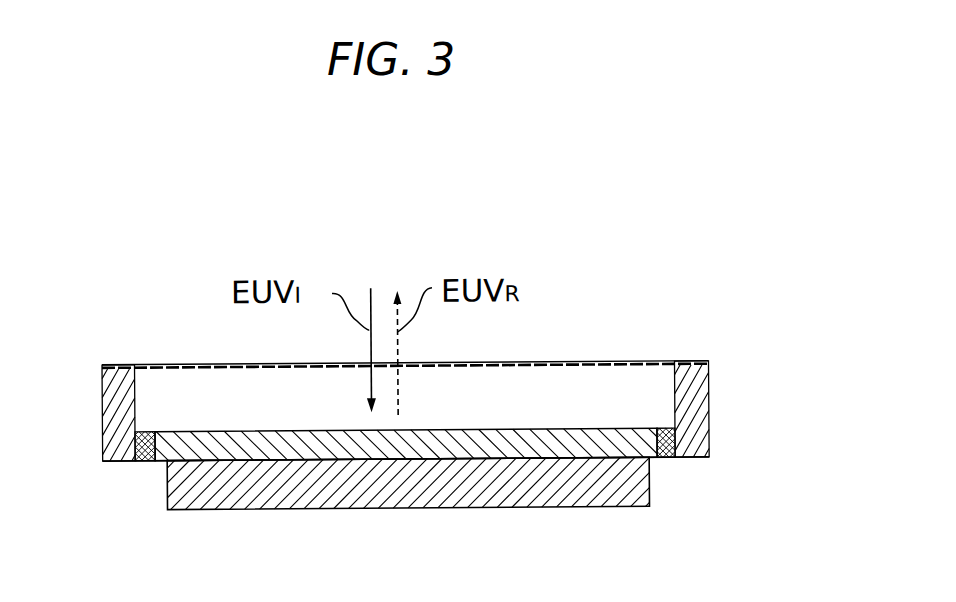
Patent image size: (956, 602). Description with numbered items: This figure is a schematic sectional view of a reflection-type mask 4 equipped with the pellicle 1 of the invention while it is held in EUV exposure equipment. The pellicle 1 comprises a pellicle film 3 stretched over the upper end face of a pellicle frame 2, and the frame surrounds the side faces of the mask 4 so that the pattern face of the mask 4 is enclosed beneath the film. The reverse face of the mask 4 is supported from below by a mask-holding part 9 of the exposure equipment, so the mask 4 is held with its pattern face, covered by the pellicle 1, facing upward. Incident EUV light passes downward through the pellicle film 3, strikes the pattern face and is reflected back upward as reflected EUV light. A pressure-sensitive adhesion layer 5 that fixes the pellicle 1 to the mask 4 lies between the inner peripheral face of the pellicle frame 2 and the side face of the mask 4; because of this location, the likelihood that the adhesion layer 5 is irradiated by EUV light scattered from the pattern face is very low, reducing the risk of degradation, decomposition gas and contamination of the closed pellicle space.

The pellicle 1 is at (95, 272).
The pellicle frame 2 is at (702, 418).
The pellicle film 3 is at (568, 363).
The reflection-type mask 4 is at (220, 440).
The pressure-sensitive adhesion layer 5 is at (663, 428).
The mask-holding part 9 is at (411, 497).